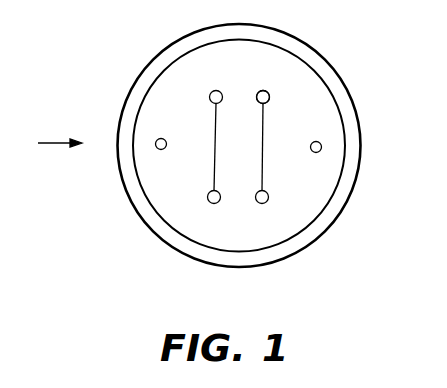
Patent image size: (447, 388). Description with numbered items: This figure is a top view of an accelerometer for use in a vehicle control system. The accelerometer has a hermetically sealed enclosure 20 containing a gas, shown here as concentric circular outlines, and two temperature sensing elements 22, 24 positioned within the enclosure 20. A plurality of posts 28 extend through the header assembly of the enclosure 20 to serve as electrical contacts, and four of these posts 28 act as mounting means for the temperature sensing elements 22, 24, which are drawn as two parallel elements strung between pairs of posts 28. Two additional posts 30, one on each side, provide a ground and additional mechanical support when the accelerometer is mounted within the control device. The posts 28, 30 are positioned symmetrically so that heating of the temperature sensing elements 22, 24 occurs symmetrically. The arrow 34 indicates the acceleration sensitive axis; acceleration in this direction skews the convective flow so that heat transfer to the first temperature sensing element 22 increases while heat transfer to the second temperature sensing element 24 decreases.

The hermetically sealed enclosure 20 is at (278, 228).
The first temperature sensing element 22 is at (213, 170).
The second temperature sensing element 24 is at (263, 168).
The posts 28 is at (270, 95).
The ground posts 30 is at (322, 146).
The arrow 34 is at (54, 129).